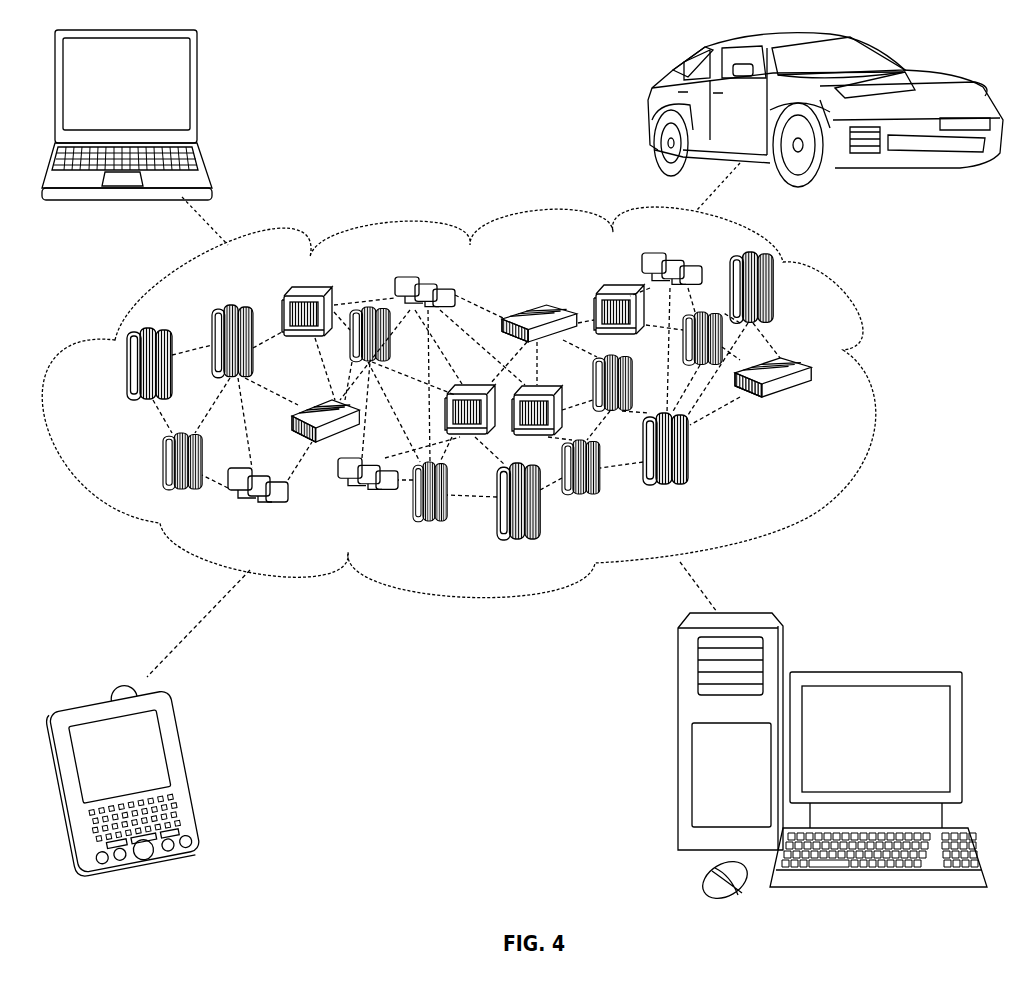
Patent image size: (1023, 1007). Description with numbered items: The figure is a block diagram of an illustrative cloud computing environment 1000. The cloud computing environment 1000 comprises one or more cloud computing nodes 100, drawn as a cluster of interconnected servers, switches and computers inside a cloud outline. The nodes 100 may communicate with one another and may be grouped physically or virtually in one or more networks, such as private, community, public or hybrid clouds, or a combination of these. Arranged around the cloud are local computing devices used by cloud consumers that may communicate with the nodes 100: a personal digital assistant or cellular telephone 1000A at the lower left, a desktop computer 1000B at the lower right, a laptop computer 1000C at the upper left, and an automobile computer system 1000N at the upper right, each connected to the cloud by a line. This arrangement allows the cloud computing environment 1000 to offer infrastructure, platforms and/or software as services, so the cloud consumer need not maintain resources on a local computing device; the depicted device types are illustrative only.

The laptop computer 1000C is at (200, 96).
The automobile computer system 1000N is at (648, 108).
The cloud computing environment 1000 is at (875, 375).
The cloud computing nodes 100 is at (814, 406).
The personal digital assistant (PDA) or cellular telephone 1000A is at (187, 770).
The desktop computer 1000B is at (872, 672).